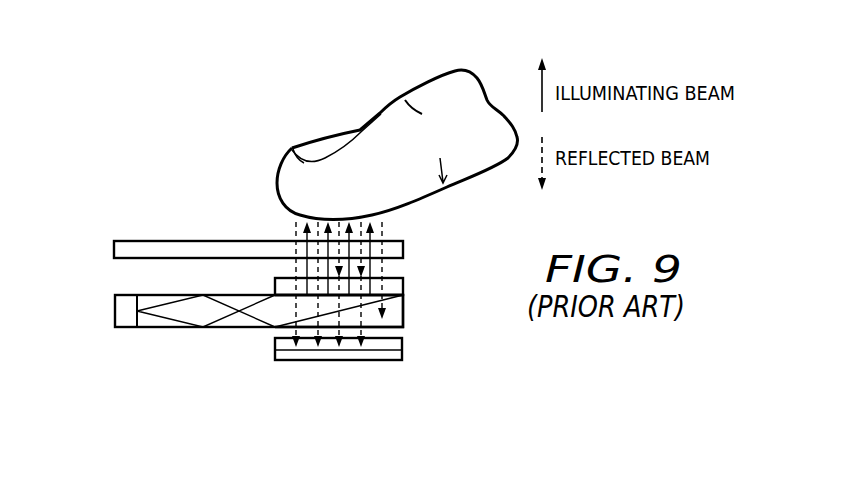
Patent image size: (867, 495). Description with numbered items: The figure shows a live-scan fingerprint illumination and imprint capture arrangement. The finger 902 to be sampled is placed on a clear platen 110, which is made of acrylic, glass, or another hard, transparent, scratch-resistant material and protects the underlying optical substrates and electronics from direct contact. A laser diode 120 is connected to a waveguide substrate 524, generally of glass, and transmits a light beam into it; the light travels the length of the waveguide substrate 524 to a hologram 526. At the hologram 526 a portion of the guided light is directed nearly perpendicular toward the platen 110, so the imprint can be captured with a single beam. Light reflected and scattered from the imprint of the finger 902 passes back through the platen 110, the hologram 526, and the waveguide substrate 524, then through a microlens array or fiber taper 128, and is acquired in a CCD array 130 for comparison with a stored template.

The finger 902 is at (316, 102).
The platen 110 is at (403, 247).
The hologram 526 is at (403, 284).
The waveguide substrate 524 is at (403, 311).
The laser diode 120 is at (115, 308).
The microlens array or fiber taper 128 is at (402, 342).
The CCD array 130 is at (340, 352).